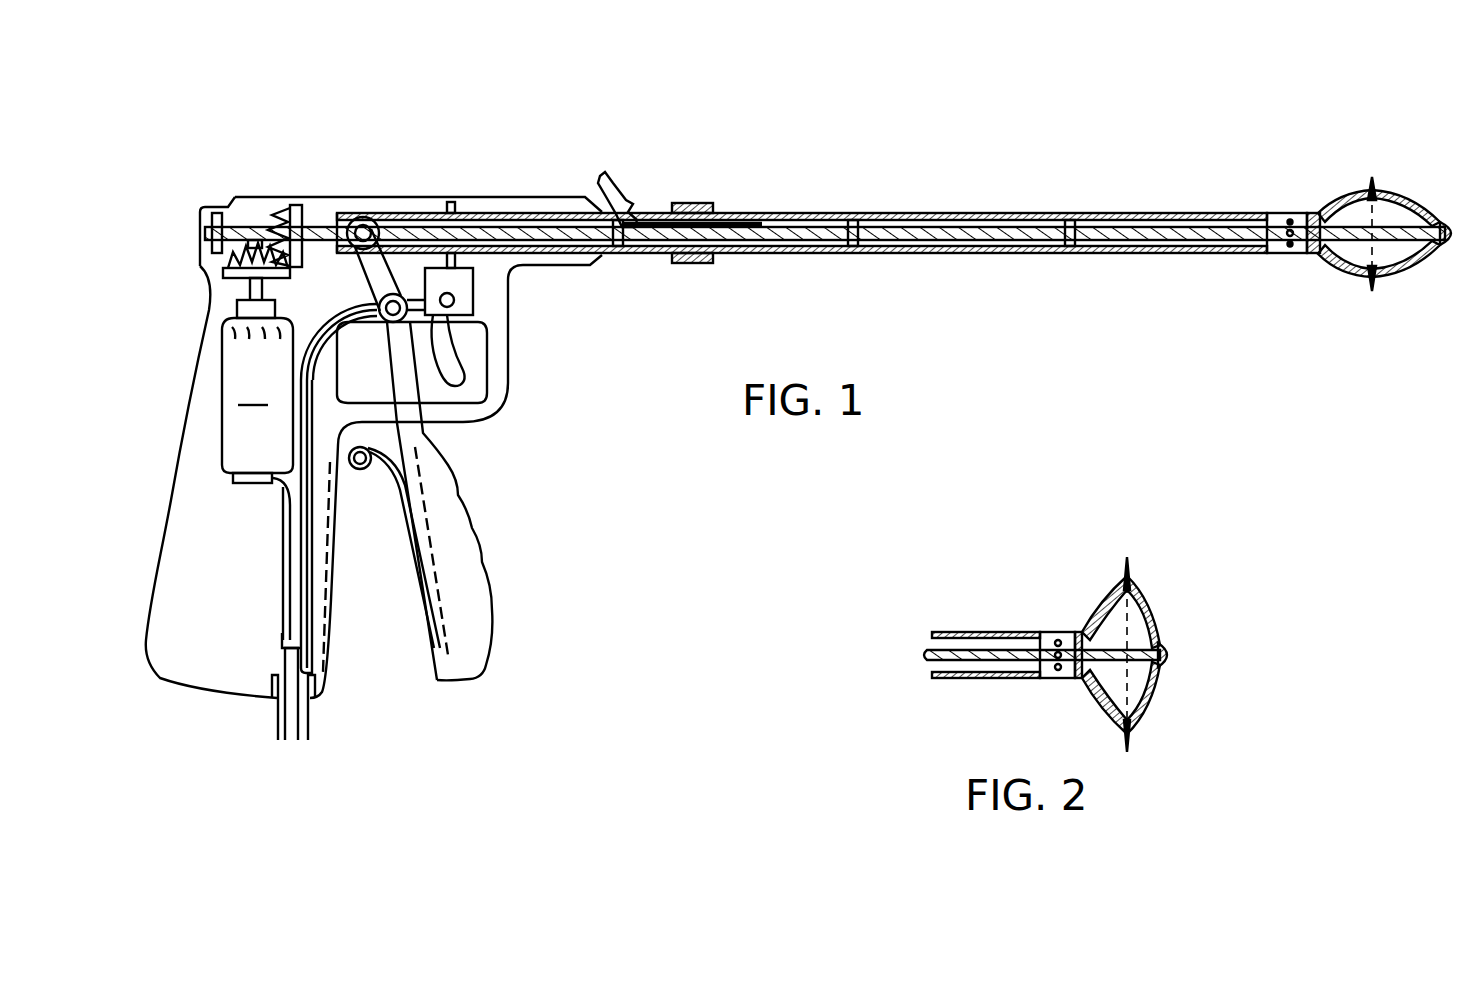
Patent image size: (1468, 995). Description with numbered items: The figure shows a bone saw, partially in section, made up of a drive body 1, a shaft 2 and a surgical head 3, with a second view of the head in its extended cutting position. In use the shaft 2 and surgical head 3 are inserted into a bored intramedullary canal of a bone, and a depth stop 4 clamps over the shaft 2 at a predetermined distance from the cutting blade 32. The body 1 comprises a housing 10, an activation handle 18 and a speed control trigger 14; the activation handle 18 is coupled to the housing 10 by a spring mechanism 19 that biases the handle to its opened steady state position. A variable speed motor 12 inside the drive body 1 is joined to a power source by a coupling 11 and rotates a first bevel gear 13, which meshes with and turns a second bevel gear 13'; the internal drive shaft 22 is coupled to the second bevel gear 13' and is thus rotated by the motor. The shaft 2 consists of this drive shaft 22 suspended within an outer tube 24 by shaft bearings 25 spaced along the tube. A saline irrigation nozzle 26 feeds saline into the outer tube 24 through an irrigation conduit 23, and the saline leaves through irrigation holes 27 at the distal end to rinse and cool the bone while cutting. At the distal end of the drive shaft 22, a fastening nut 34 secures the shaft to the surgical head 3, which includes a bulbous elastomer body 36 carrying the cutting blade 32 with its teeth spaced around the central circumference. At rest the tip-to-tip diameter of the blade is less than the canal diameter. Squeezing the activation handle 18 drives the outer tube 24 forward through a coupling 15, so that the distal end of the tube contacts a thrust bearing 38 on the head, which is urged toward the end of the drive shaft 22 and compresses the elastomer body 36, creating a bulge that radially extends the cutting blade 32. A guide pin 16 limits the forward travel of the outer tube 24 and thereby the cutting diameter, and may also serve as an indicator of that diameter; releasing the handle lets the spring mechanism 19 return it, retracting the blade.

In FIG. 1, the drive body 1 is at (336, 125).
In FIG. 1, the shaft 2 is at (830, 170).
In FIG. 1, the surgical head 3 is at (1404, 314).
In FIG. 1, the depth stop 4 is at (690, 266).
In FIG. 1, the housing 10 is at (210, 266).
In FIG. 1, the coupling 11 is at (312, 720).
In FIG. 1, the variable speed motor 12 is at (257, 459).
In FIG. 1, the first bevel gear 13 is at (256, 259).
In FIG. 1, the second bevel gear 13' is at (294, 199).
In FIG. 1, the speed control trigger 14 is at (466, 380).
In FIG. 1, the coupling 15 is at (366, 218).
In FIG. 1, the guide pin 16 is at (452, 202).
In FIG. 1, the activation handle 18 is at (475, 538).
In FIG. 1, the spring mechanism 19 is at (362, 472).
In FIG. 1, the drive shaft 22 is at (760, 226).
In FIG. 2, the drive shaft 22 is at (930, 663).
In FIG. 1, the irrigation conduit 23 is at (656, 216).
In FIG. 1, the outer tube 24 is at (936, 214).
In FIG. 2, the outer tube 24 is at (966, 632).
In FIG. 1, the shaft bearings 25 is at (856, 254).
In FIG. 1, the saline irrigation nozzle 26 is at (606, 175).
In FIG. 1, the irrigation holes 27 is at (1289, 250).
In FIG. 2, the irrigation holes 27 is at (1059, 672).
In FIG. 1, the cutting blade 32 is at (1373, 178).
In FIG. 2, the cutting blade 32 is at (1130, 558).
In FIG. 1, the fastening nut 34 is at (1448, 224).
In FIG. 2, the fastening nut 34 is at (1166, 646).
In FIG. 1, the elastomer body 36 is at (1333, 268).
In FIG. 2, the elastomer body 36 is at (1150, 697).
In FIG. 1, the thrust bearing 38 is at (1308, 214).
In FIG. 2, the thrust bearing 38 is at (1080, 632).